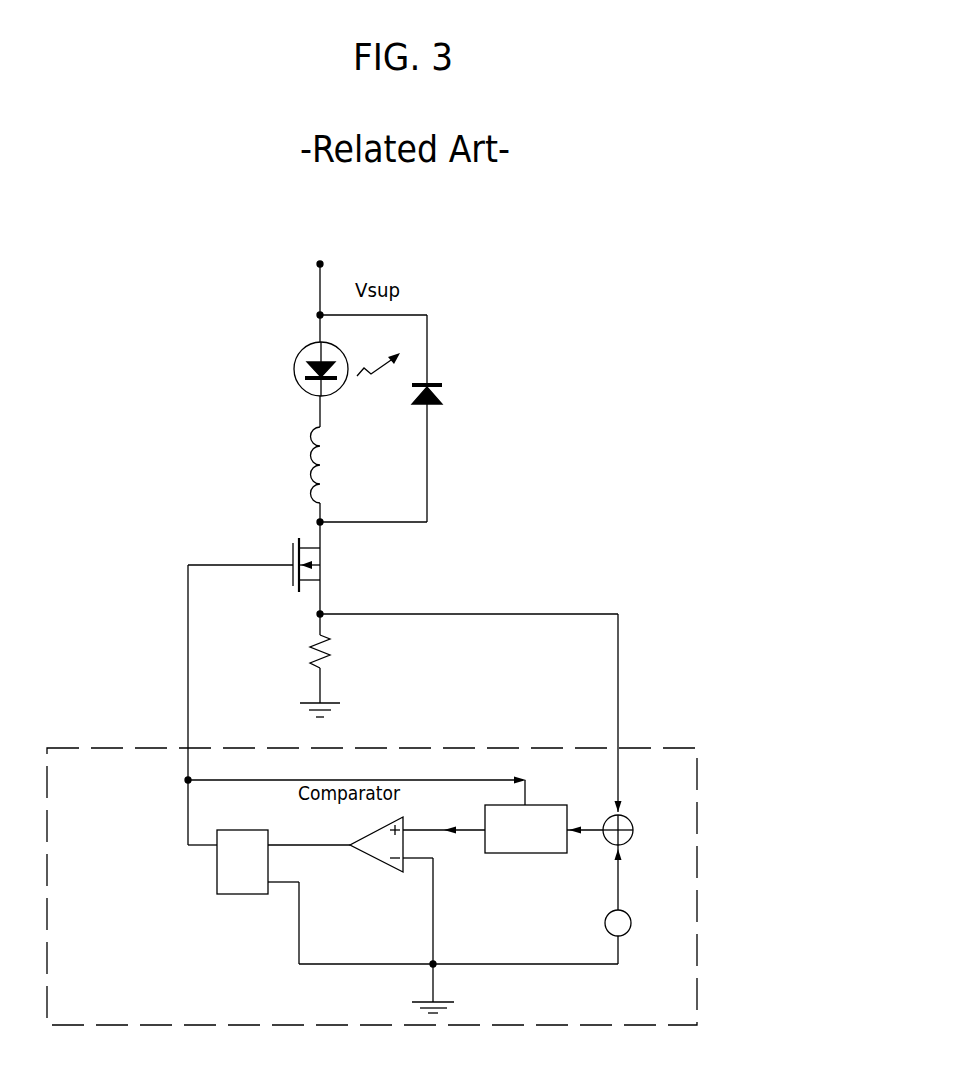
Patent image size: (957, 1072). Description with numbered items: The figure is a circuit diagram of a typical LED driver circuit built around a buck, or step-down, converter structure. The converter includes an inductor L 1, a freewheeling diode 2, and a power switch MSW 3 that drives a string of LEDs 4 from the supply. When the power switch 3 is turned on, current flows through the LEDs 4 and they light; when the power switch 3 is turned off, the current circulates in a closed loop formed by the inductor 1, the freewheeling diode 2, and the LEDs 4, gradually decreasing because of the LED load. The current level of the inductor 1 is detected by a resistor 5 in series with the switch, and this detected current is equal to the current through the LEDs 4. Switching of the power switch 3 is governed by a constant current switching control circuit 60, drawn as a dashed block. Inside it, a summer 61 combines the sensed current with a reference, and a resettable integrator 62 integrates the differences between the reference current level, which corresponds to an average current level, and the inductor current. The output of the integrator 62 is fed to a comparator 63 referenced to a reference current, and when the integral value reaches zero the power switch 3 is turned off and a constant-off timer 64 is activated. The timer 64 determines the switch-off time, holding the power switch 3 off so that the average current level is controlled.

The inductor L 1 is at (308, 470).
The freewheeling diode DFW 2 is at (453, 372).
The power switch MSW 3 is at (323, 562).
The LEDs 4 is at (295, 345).
The resistor 5 is at (333, 655).
The constant current switching control circuit 60 is at (697, 805).
The summer 61 is at (658, 783).
The resettable integrator 62 is at (533, 803).
The comparator 63 is at (402, 870).
The timer 64 is at (215, 857).